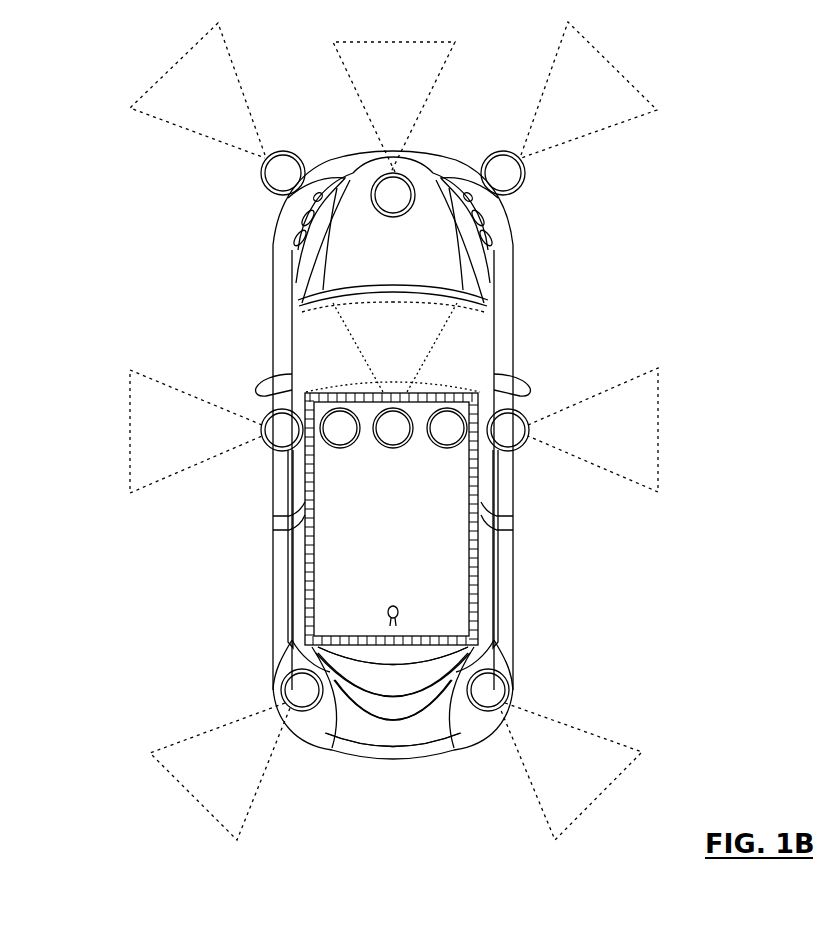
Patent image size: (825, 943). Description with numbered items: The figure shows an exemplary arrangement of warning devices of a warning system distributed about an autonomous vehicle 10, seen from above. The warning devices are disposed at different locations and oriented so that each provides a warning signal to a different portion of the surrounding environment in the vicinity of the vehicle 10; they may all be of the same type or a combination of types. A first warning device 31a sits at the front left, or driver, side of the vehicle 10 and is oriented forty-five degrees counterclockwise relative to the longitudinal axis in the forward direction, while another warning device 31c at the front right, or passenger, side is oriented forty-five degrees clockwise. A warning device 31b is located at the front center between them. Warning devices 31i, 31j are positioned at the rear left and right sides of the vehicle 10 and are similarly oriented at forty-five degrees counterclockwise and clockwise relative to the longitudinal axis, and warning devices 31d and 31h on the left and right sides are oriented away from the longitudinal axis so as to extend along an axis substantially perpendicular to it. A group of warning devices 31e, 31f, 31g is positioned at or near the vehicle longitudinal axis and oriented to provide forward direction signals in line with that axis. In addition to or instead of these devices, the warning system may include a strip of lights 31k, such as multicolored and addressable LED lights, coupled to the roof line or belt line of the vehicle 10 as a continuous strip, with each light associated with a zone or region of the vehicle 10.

The vehicle 10 is at (669, 140).
The first warning device 31a is at (264, 186).
The warning device 31b is at (391, 218).
The warning device 31c is at (521, 187).
The warning device 31d is at (266, 452).
The warning device 31e is at (347, 450).
The warning device 31f is at (393, 450).
The warning device 31g is at (452, 450).
The warning device 31h is at (516, 451).
The warning device 31i is at (278, 692).
The warning device 31j is at (515, 688).
The strip of lights 31k is at (470, 570).